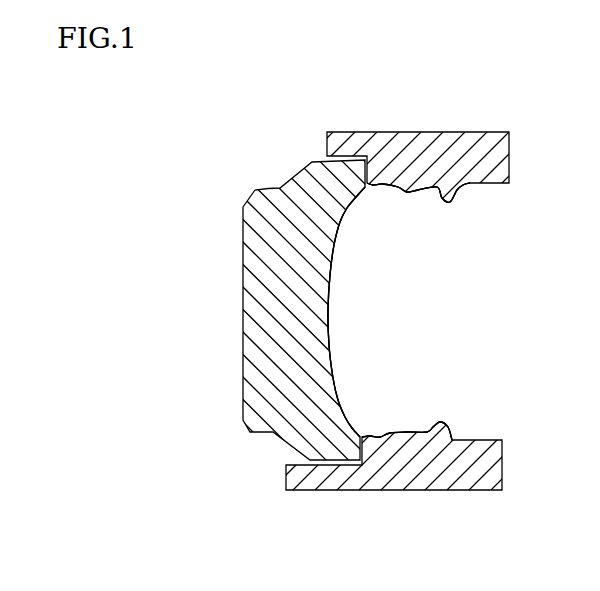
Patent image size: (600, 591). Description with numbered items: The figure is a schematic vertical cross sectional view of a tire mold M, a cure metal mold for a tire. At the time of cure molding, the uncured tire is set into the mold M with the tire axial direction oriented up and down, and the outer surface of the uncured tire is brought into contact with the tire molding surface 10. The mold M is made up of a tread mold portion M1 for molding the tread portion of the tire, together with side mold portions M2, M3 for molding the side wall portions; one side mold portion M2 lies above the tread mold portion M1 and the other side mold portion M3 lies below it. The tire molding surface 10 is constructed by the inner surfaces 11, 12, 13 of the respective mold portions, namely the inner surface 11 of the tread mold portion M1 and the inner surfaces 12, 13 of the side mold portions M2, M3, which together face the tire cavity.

The tire mold M is at (249, 171).
The tread mold portion M1 is at (243, 272).
The side mold portion M2 is at (412, 132).
The side mold portion M3 is at (389, 491).
The tire molding surface 10 is at (405, 311).
The inner surface 11 is at (330, 315).
The inner surface 12 is at (408, 193).
The inner surface 13 is at (398, 432).